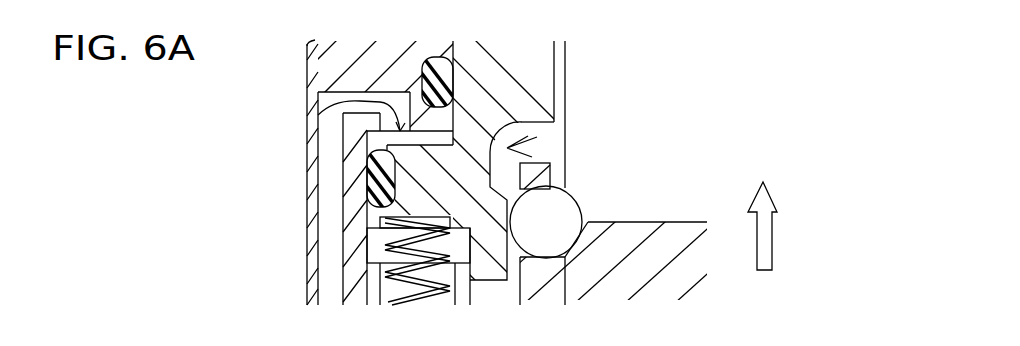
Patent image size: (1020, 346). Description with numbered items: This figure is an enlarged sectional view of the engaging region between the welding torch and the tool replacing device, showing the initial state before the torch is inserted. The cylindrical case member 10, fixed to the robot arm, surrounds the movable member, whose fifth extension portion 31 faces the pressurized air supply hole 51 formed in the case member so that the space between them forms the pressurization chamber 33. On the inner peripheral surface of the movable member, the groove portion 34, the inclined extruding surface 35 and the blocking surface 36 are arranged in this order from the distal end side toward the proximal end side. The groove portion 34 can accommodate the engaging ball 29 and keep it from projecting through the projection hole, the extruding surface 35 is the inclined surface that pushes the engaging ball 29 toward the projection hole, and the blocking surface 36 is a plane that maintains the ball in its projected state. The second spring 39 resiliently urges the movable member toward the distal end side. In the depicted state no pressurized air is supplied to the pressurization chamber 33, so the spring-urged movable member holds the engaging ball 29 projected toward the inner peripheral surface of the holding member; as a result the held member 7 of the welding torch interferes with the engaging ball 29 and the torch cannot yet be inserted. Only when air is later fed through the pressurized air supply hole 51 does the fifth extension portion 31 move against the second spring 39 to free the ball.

The case member 10 is at (312, 93).
The pressurization chamber 33 is at (310, 131).
The groove portion 34 is at (520, 140).
The extruding surface 35 is at (563, 172).
The engaging ball 29 is at (515, 240).
The blocking surface 36 is at (582, 214).
The held member 7 is at (683, 232).
The fifth extension portion 31 is at (418, 182).
The pressurized air supply hole 51 is at (316, 229).
The second spring 39 is at (387, 248).